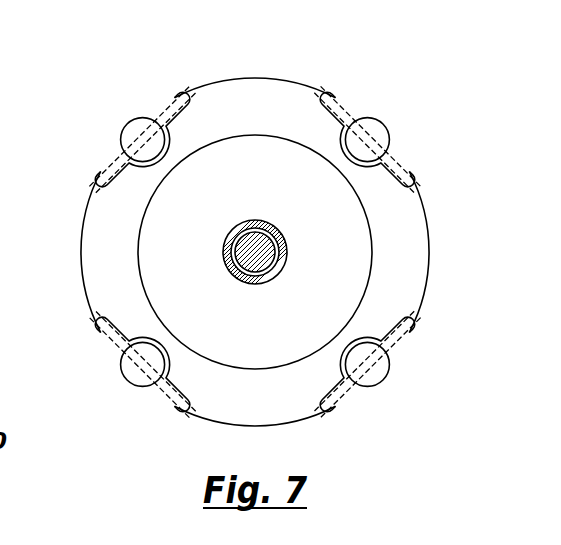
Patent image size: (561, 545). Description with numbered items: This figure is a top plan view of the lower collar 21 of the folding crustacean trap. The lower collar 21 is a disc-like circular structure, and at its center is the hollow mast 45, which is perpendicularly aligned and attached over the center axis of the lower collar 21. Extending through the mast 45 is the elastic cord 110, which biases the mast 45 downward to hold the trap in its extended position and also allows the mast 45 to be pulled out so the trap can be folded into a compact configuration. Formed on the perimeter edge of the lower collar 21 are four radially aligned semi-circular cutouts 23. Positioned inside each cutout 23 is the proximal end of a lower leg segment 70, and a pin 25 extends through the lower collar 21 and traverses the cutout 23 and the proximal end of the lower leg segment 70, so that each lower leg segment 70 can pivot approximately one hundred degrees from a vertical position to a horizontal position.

The lower collar 21 is at (285, 89).
The cutouts 23 is at (118, 156).
The pin 25 is at (180, 100).
The lower leg segment 70 is at (135, 127).
The elastic cord 110 is at (246, 236).
The mast 45 is at (228, 268).